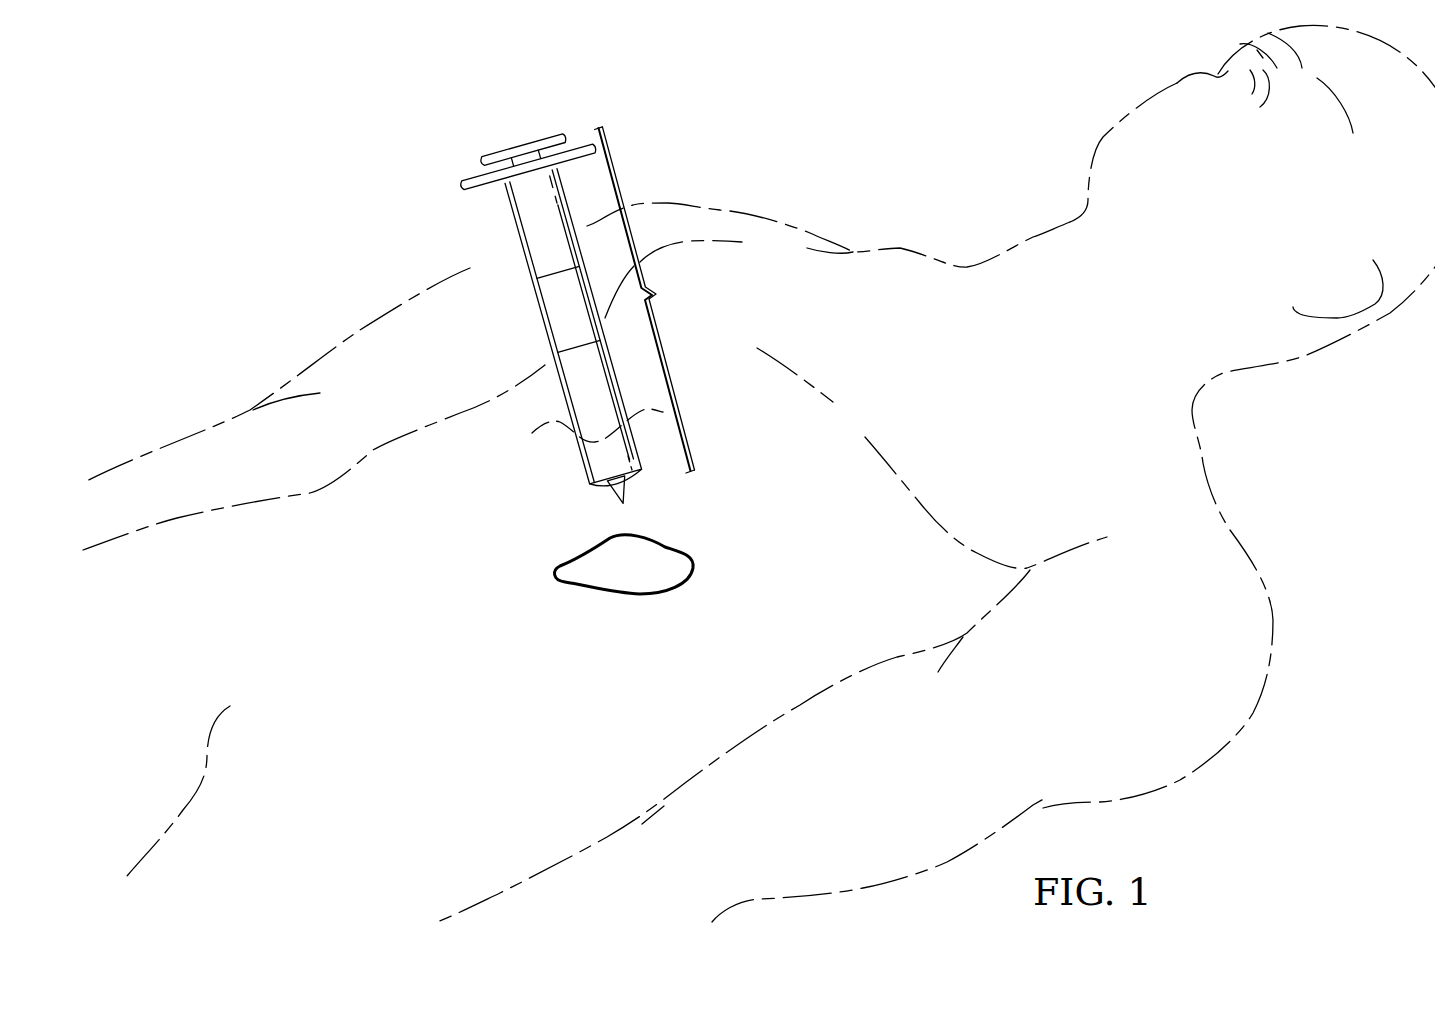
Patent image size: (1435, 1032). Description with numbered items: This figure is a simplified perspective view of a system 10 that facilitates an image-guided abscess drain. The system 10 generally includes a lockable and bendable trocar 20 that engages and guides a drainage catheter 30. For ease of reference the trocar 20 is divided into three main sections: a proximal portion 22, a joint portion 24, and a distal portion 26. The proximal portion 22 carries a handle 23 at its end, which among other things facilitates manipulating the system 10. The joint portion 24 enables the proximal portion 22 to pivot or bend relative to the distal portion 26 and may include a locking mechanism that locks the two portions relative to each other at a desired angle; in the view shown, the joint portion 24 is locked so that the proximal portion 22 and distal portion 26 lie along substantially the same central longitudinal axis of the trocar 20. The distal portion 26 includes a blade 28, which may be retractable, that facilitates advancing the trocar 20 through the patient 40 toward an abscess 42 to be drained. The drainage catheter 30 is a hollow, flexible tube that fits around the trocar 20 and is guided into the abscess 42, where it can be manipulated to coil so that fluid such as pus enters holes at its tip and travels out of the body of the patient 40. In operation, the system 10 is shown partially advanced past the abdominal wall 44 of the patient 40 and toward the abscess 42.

The system 10 is at (408, 156).
The trocar 20 is at (647, 300).
The proximal portion 22 is at (513, 211).
The handle 23 is at (528, 150).
The joint portion 24 is at (546, 323).
The distal portion 26 is at (578, 383).
The blade 28 is at (614, 499).
The drainage catheter 30 is at (530, 278).
The patient 40 is at (893, 157).
The abscess 42 is at (565, 572).
The abdominal wall 44 is at (556, 428).